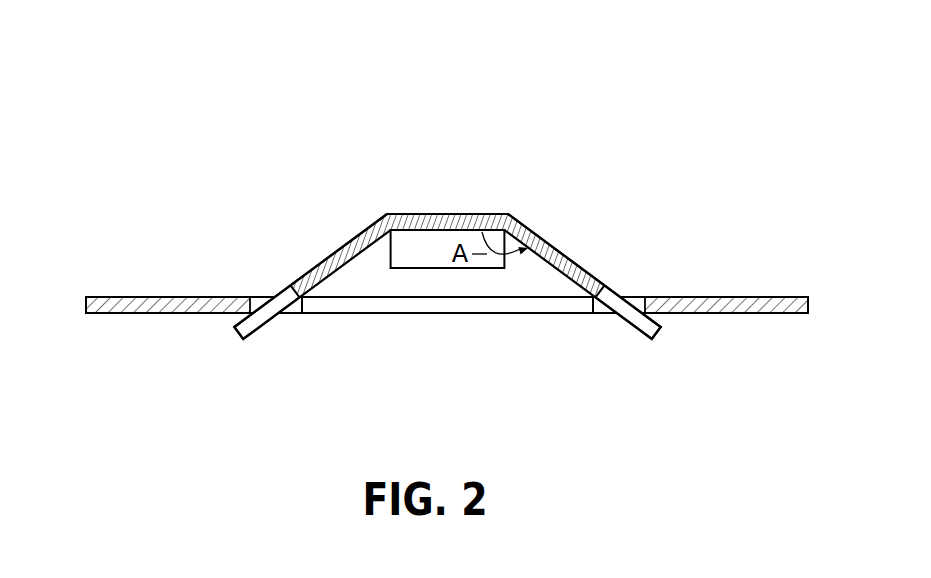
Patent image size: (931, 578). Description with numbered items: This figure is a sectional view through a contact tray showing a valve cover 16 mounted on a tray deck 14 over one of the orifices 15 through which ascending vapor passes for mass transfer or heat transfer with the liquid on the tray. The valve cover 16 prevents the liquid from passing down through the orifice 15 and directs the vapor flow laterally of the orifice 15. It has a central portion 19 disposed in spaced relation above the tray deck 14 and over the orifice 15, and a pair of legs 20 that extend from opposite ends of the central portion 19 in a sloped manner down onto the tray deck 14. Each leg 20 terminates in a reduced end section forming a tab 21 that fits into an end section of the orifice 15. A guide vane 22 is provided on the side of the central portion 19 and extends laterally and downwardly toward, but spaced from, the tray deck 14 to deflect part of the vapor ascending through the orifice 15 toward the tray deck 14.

The tray deck 14 is at (180, 297).
The orifice 15 is at (467, 303).
The valve cover 16 is at (447, 258).
The central portion 19 is at (432, 213).
The leg 20 is at (350, 240).
The tab 21 is at (273, 311).
The guide vane 22 is at (410, 255).